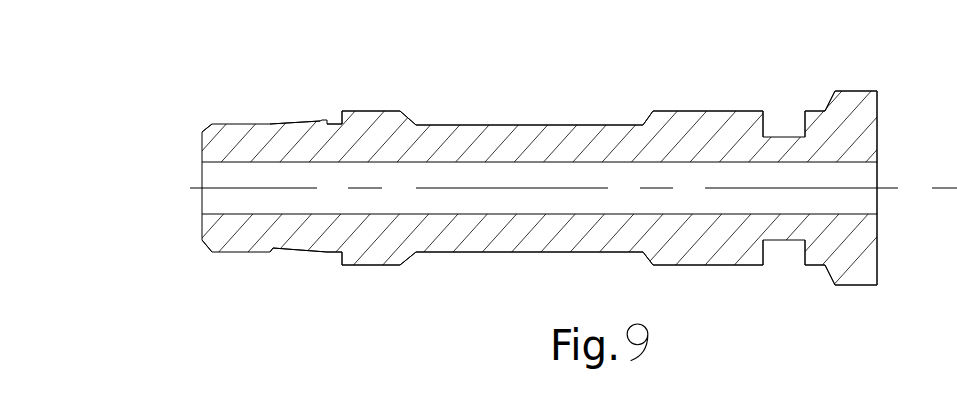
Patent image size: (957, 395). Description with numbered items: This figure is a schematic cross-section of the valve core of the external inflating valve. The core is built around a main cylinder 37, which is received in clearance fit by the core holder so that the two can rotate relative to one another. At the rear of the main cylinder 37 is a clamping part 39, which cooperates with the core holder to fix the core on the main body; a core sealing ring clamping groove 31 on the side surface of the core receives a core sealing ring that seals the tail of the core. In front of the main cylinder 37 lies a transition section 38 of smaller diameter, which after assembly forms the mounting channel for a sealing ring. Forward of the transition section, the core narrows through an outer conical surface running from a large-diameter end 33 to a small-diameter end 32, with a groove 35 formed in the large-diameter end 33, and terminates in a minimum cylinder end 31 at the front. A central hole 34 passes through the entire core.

The core sealing ring clamping groove 31 is at (137, 58).
The small-diameter end 32 is at (273, 248).
The large-diameter end 33 is at (330, 253).
The central hole 34 is at (202, 135).
The groove 35 is at (343, 265).
The main cylinder 37 is at (722, 125).
The transition section 38 is at (518, 125).
The clamping part 39 is at (840, 110).